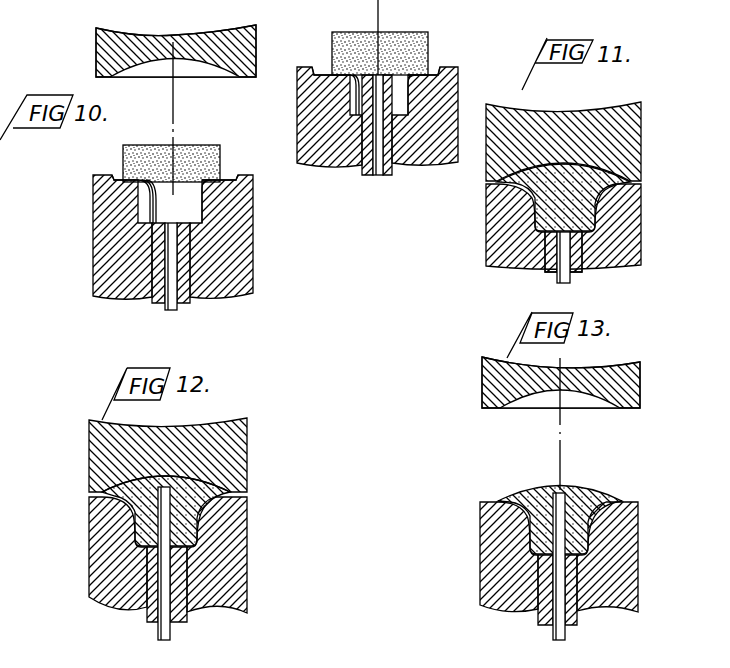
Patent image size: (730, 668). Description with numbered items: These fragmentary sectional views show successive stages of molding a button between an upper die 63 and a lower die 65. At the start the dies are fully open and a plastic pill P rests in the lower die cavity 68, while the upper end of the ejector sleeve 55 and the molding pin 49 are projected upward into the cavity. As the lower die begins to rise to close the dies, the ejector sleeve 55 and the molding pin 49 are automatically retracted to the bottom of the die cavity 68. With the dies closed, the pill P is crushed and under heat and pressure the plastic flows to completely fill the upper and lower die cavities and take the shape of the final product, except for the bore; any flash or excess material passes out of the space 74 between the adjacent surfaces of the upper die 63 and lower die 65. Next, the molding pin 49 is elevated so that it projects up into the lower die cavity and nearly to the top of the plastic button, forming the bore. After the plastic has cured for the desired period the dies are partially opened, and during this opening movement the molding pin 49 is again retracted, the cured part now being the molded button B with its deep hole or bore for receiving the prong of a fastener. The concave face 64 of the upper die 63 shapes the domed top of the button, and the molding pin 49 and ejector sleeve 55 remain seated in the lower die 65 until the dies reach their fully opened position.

In FIG. 10, the molding pin 49 is at (166, 306).
In FIG. 9, the molding pin 49 is at (363, 170).
In FIG. 11, the molding pin 49 is at (557, 279).
In FIG. 12, the molding pin 49 is at (163, 605).
In FIG. 13, the molding pin 49 is at (540, 620).
In FIG. 10, the ejector sleeve 55 is at (181, 281).
In FIG. 9, the ejector sleeve 55 is at (390, 168).
In FIG. 11, the ejector sleeve 55 is at (583, 252).
In FIG. 12, the ejector sleeve 55 is at (184, 613).
In FIG. 13, the ejector sleeve 55 is at (578, 620).
In FIG. 10, the upper die 63 is at (96, 43).
In FIG. 11, the upper die 63 is at (632, 121).
In FIG. 12, the upper die 63 is at (235, 462).
In FIG. 13, the upper die 63 is at (640, 377).
In FIG. 10, the concave die surface 64 is at (216, 77).
In FIG. 13, the concave die surface 64 is at (607, 409).
In FIG. 10, the lower die 65 is at (106, 226).
In FIG. 9, the lower die 65 is at (461, 88).
In FIG. 11, the lower die 65 is at (633, 226).
In FIG. 12, the lower die 65 is at (237, 530).
In FIG. 13, the lower die 65 is at (622, 547).
In FIG. 10, the lower die cavity 68 is at (221, 183).
In FIG. 9, the lower die cavity 68 is at (433, 72).
In FIG. 11, the space between the adjacent surfaces of the upper and lower dies 74 is at (642, 183).
In FIG. 12, the space between the adjacent surfaces of the upper and lower dies 74 is at (100, 492).
In FIG. 10, the plastic pill P is at (160, 150).
In FIG. 9, the plastic pill P is at (333, 43).
In FIG. 13, the molded button B is at (597, 490).